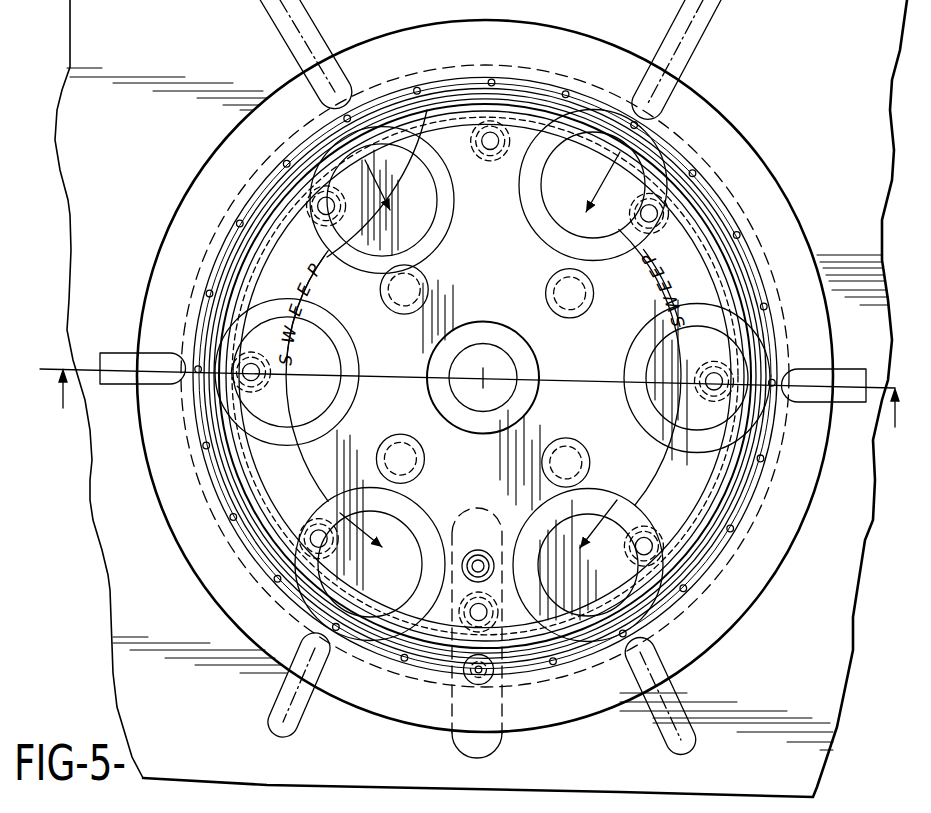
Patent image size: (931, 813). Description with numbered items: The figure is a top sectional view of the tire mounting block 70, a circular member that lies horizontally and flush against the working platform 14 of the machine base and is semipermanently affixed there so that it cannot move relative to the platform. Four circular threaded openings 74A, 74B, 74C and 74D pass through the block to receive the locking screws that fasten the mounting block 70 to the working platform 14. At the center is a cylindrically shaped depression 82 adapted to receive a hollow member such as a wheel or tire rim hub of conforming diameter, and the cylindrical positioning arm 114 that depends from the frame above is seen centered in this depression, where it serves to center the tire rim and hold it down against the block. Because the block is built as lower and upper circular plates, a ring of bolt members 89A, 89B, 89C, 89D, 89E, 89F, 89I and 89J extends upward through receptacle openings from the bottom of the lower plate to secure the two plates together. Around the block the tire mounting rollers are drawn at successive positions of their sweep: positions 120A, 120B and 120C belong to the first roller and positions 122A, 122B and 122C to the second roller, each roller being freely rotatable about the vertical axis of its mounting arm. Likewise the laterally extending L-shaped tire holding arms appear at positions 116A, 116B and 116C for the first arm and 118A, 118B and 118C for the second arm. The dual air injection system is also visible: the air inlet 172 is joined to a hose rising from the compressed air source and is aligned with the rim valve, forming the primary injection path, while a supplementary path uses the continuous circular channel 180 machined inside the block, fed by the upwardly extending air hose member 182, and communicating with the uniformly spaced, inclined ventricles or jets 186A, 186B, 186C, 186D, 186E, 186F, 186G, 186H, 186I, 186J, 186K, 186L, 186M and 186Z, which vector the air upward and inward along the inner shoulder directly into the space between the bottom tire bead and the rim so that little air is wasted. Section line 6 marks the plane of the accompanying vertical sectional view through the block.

The section line 6- 6 is at (475, 404).
The working platform 14 is at (216, 779).
The tire mounting block 70 is at (384, 724).
The circular threaded opening 74A is at (428, 284).
The circular threaded opening 74B is at (594, 293).
The circular threaded opening 74C is at (565, 439).
The circular threaded opening 74D is at (399, 435).
The cylindrically shaped depression 82 is at (430, 397).
The bolt member 89A is at (311, 526).
The bolt member 89B is at (274, 346).
The bolt member 89C is at (317, 222).
The bolt member 89D is at (486, 154).
The bolt member 89E is at (643, 200).
The bolt member 89F is at (719, 365).
The bolt member 89I is at (677, 517).
The bolt member 89J is at (466, 610).
The positioning arm 114 is at (520, 370).
The tire holding arm 116A is at (296, 52).
The tire holding arm 116B is at (122, 353).
The tire holding arm 116C is at (284, 710).
The tire holding arm 118A is at (700, 63).
The tire holding arm 118B is at (866, 370).
The tire holding arm 118C is at (697, 735).
The tire mounting roller 120A is at (456, 197).
The tire mounting roller 120B is at (345, 344).
The tire mounting roller 120C is at (400, 512).
The tire mounting roller 122A is at (545, 214).
The tire mounting roller 122B is at (650, 356).
The tire mounting roller 122C is at (586, 512).
The air inlet 172 is at (461, 566).
The circular channel 180 is at (232, 560).
The air hose member 182 is at (470, 676).
The ventricle 186A is at (202, 372).
The ventricle 186B is at (206, 294).
The ventricle 186C is at (236, 224).
The ventricle 186D is at (283, 164).
The ventricle 186E is at (344, 119).
The ventricle 186F is at (417, 87).
The ventricle 186G is at (491, 79).
The ventricle 186H is at (567, 91).
The ventricle 186I is at (638, 125).
The ventricle 186J is at (696, 173).
The ventricle 186K is at (740, 235).
The ventricle 186L is at (768, 308).
The ventricle 186M is at (775, 387).
The ventricle 186Z is at (210, 448).